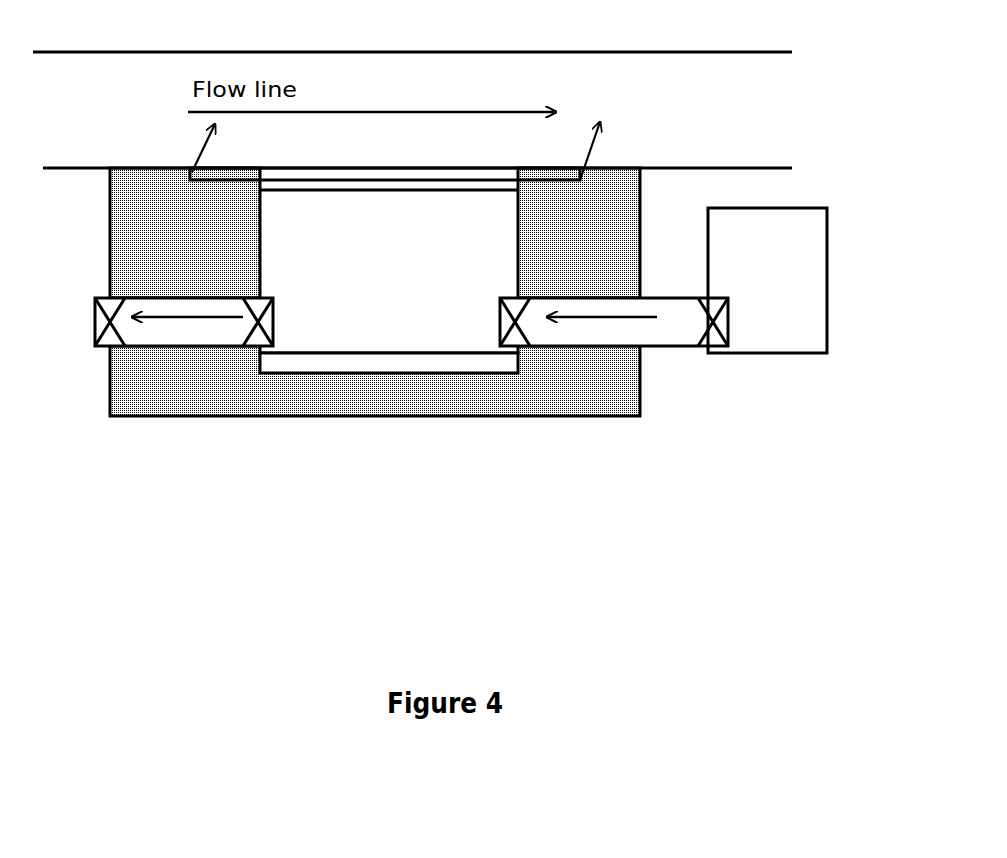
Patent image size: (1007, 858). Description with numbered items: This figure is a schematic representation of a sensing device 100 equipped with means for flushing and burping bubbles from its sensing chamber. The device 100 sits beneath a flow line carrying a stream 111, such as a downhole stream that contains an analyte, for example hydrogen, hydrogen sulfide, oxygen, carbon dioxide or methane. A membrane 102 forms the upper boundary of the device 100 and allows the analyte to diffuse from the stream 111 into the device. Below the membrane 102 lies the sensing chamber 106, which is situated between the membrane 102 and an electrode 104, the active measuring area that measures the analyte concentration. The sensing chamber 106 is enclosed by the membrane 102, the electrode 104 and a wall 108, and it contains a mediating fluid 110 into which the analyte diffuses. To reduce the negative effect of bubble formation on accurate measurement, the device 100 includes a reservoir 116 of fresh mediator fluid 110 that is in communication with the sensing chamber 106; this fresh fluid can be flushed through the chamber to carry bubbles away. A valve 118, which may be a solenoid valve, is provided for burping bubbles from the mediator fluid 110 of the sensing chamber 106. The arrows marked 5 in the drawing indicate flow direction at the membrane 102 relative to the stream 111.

The section line / flow direction indicator 5 is at (409, 145).
The device 100 is at (448, 395).
The membrane 102 is at (518, 189).
The electrode 104 is at (463, 365).
The sensing chamber 106 is at (318, 318).
The wall 108 is at (208, 415).
The mediating fluid 110 is at (543, 271).
The stream 111 is at (337, 73).
The reservoir 116 is at (765, 353).
The valve 118 is at (95, 340).